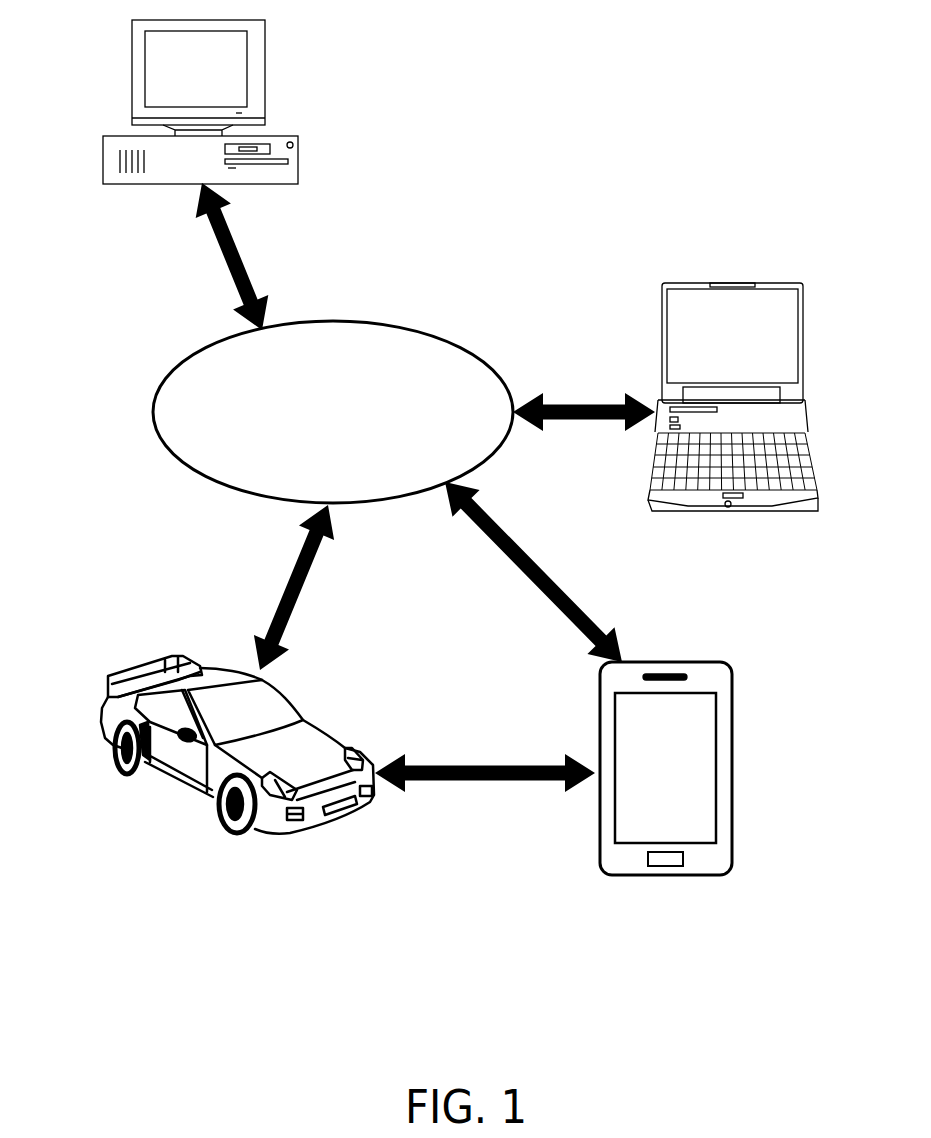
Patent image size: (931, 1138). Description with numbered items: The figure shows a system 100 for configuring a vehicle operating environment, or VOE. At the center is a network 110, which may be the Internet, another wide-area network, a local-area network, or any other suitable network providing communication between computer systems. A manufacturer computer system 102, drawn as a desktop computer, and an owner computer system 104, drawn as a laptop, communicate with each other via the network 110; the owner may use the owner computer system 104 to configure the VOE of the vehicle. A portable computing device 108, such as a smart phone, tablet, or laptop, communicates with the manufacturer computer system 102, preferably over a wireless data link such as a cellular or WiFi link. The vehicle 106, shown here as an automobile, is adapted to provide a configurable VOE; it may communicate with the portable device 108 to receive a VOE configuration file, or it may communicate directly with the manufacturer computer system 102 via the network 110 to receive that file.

The system 100 is at (536, 152).
The manufacturer computer system 102 is at (263, 62).
The owner computer system 104 is at (692, 283).
The vehicle 106 is at (155, 655).
The portable computing device 108 is at (672, 660).
The network 110 is at (353, 437).